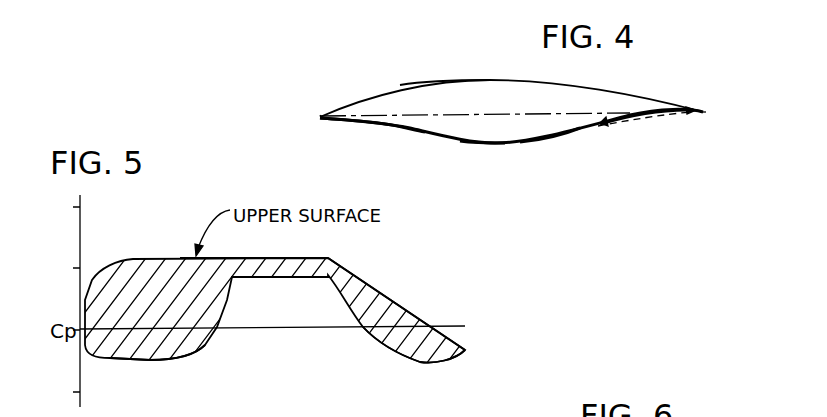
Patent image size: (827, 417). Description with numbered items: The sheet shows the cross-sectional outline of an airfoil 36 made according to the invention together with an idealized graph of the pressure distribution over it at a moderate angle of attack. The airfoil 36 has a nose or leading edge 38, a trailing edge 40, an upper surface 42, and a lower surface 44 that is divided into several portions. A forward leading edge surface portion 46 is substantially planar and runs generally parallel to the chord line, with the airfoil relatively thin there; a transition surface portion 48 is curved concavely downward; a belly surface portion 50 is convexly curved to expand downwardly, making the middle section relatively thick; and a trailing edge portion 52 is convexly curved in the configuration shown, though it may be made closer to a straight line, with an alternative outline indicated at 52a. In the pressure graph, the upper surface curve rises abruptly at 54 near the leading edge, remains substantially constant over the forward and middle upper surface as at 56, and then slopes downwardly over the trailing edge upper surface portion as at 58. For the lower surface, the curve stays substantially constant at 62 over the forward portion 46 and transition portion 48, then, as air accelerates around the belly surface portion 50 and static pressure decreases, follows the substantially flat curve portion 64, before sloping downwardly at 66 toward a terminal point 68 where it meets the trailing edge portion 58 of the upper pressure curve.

In FIG. 4, the airfoil 36 is at (452, 75).
In FIG. 4, the leading edge 38 is at (320, 117).
In FIG. 4, the trailing edge 40 is at (703, 112).
In FIG. 4, the upper surface 42 is at (405, 85).
In FIG. 4, the lower surface 44 is at (537, 141).
In FIG. 4, the forward leading edge surface portion 46 is at (348, 123).
In FIG. 4, the transition surface portion 48 is at (415, 130).
In FIG. 4, the belly surface portion 50 is at (487, 145).
In FIG. 4, the trailing edge portion 52 is at (667, 112).
In FIG. 4, the deflected flap position 52a is at (643, 118).
In FIG. 5, the abrupt pressure rise 54 is at (87, 302).
In FIG. 5, the constant pressure portion 56 is at (250, 256).
In FIG. 5, the trailing edge pressure curve portion 58 is at (397, 300).
In FIG. 5, the constant lower pressure portion 62 is at (157, 361).
In FIG. 5, the flat curve portion 64 is at (278, 279).
In FIG. 5, the downward sloping curve portion 66 is at (400, 357).
In FIG. 5, the terminal point 68 is at (465, 350).